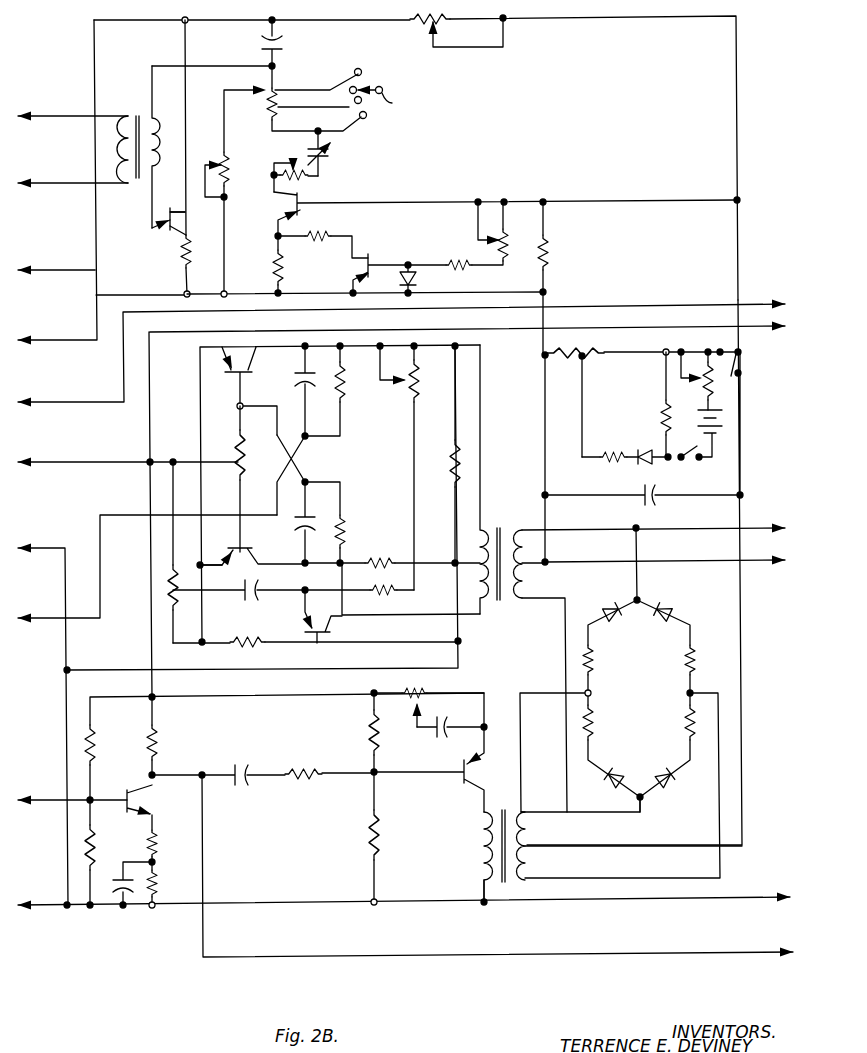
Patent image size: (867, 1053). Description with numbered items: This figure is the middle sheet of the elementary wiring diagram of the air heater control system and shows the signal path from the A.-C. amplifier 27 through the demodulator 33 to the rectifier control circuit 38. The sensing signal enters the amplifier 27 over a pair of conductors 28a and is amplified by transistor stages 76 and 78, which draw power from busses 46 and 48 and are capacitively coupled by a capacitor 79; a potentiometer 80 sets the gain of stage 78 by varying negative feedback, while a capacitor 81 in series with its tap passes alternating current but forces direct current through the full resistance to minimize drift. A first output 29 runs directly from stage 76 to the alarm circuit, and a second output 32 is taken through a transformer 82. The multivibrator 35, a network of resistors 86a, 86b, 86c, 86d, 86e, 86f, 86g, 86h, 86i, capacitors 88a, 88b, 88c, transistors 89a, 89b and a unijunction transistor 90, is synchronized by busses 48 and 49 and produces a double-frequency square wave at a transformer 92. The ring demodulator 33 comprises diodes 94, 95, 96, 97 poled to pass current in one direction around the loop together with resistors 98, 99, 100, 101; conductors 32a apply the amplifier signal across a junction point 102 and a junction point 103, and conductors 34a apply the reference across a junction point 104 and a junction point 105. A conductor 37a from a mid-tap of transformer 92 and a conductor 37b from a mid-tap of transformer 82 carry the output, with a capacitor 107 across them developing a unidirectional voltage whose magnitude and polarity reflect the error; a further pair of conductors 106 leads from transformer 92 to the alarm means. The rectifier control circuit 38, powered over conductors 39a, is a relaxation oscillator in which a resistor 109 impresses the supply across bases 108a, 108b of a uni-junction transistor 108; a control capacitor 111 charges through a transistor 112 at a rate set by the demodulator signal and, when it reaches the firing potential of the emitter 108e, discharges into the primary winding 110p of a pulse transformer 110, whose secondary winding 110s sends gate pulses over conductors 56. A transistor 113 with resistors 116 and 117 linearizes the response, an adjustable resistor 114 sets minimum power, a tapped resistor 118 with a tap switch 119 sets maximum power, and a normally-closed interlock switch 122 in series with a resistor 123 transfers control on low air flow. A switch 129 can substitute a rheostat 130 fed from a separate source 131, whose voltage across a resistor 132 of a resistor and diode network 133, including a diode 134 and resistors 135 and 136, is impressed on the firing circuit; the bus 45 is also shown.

The A.-C. amplifier 27 is at (303, 862).
The pair of conductors 28a is at (56, 800).
The first output 29 is at (308, 914).
The second output 32 is at (462, 868).
The pair of conductors 32a is at (596, 838).
The ring demodulator 33 is at (651, 711).
The pair of conductors 34a is at (618, 564).
The multivibrator 35 is at (379, 472).
The conductor 37a is at (612, 486).
The conductor 37b is at (750, 484).
The rectifier control circuit 38 is at (531, 140).
The pair of conductors 39a is at (96, 314).
The supply line 45 is at (60, 392).
The bus 46 is at (60, 424).
The bus 48 is at (65, 548).
The bus 49 is at (100, 578).
The pair of conductors 56 is at (62, 172).
The transistor stage 76 is at (136, 760).
The transistor stage 78 is at (446, 860).
The capacitor 79 is at (244, 772).
The potentiometer 80 is at (430, 706).
The capacitor 81 is at (438, 742).
The transformer 82 is at (500, 816).
The resistor 86a is at (262, 466).
The resistor 86b is at (406, 402).
The resistor 86c is at (344, 390).
The resistor 86d is at (368, 570).
The resistor 86e is at (390, 596).
The resistor 86f is at (454, 410).
The resistor 86g is at (343, 526).
The resistor 86h is at (192, 607).
The resistor 86i is at (260, 654).
The capacitor 88a is at (298, 384).
The capacitor 88b is at (244, 550).
The capacitor 88c is at (254, 604).
The transistor 89a is at (234, 376).
The transistor 89b is at (240, 556).
The unijunction transistor 90 is at (320, 646).
The transformer 92 is at (498, 526).
The diode 94 is at (612, 624).
The diode 95 is at (672, 607).
The diode 96 is at (660, 772).
The diode 97 is at (626, 770).
The resistor 98 is at (591, 653).
The resistor 99 is at (588, 726).
The resistor 100 is at (694, 658).
The resistor 101 is at (686, 726).
The junction point 102 is at (590, 690).
The junction point 103 is at (690, 690).
The junction point 104 is at (636, 592).
The junction point 105 is at (646, 798).
The pair of conductors 106 is at (710, 548).
The capacitor 107 is at (660, 502).
The uni-junction transistor 108 is at (174, 220).
The base 108a is at (172, 210).
The base 108b is at (176, 236).
The emitter 108e is at (164, 233).
The resistor 109 is at (184, 264).
The pulse transformer 110 is at (140, 130).
The primary winding 110p is at (150, 164).
The secondary winding 110s is at (124, 176).
The control capacitor 111 is at (286, 48).
The transistor 112 is at (284, 228).
The transistor 113 is at (352, 270).
The adjustable resistor 114 is at (224, 172).
The resistor 116 is at (315, 235).
The resistor 117 is at (272, 266).
The tapped resistor 118 is at (284, 88).
The tap switch 119 is at (386, 102).
The interlock switch 122 is at (332, 154).
The resistor 123 is at (304, 178).
The switch 129 is at (742, 366).
The rheostat 130 is at (708, 386).
The separate source 131 is at (724, 440).
The resistor 132 is at (607, 352).
The resistor and diode network 133 is at (640, 401).
The diode 134 is at (652, 464).
The resistor 135 is at (600, 466).
The resistor 136 is at (654, 418).